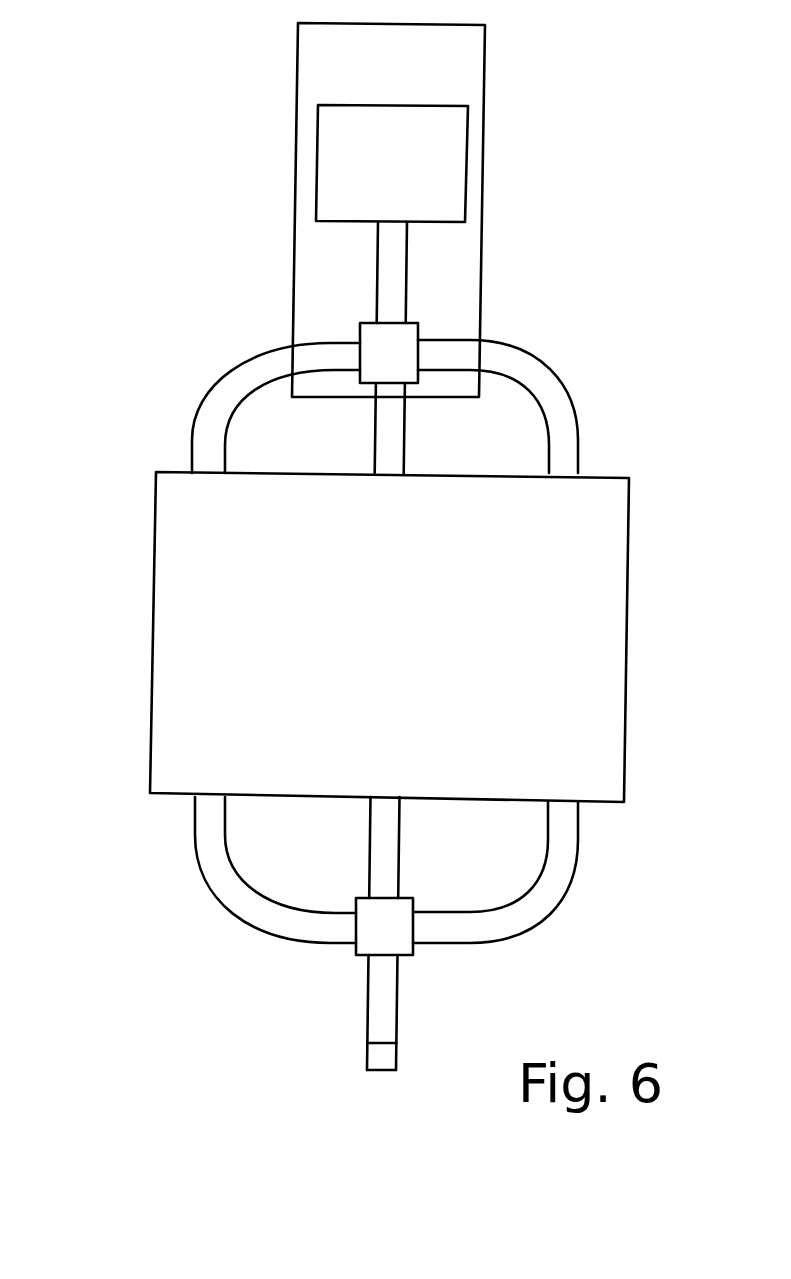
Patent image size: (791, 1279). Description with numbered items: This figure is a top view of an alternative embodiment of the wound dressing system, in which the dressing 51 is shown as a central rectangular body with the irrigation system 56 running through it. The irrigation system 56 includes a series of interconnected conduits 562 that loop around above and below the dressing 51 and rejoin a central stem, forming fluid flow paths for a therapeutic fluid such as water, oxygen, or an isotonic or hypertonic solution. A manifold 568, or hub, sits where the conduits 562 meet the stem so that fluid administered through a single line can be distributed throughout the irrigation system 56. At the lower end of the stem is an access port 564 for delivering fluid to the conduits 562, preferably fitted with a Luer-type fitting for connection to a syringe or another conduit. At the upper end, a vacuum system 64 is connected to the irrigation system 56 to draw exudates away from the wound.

The vacuum system 64 is at (483, 187).
The irrigation system 56 is at (596, 385).
The conduits 562 is at (372, 452).
The dressing 51 is at (397, 605).
The manifold 568 is at (413, 955).
The access port 564 is at (360, 1063).